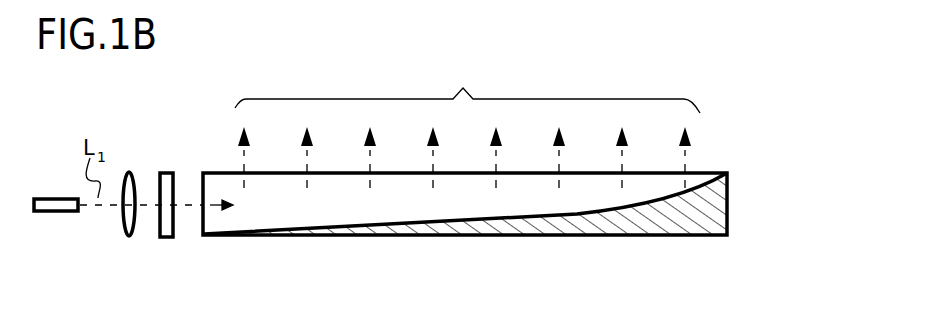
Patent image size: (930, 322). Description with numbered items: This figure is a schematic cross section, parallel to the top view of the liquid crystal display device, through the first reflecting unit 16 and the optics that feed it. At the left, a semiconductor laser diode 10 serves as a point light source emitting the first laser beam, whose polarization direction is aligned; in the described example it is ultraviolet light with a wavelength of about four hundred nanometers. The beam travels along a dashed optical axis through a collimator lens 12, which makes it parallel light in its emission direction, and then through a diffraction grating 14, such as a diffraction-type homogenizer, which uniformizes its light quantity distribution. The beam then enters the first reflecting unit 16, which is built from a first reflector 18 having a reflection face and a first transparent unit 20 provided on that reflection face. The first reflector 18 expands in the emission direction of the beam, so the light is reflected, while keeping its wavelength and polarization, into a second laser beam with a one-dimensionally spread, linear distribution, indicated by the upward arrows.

The semiconductor laser diode 10 is at (58, 198).
The collimator lens 12 is at (129, 171).
The diffraction grating 14 is at (168, 172).
The first reflecting unit 16 is at (752, 217).
The first reflector 18 is at (613, 225).
The first transparent unit 20 is at (354, 204).